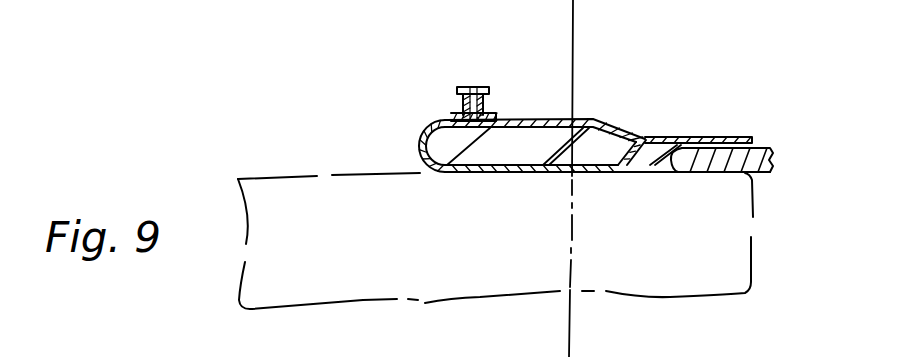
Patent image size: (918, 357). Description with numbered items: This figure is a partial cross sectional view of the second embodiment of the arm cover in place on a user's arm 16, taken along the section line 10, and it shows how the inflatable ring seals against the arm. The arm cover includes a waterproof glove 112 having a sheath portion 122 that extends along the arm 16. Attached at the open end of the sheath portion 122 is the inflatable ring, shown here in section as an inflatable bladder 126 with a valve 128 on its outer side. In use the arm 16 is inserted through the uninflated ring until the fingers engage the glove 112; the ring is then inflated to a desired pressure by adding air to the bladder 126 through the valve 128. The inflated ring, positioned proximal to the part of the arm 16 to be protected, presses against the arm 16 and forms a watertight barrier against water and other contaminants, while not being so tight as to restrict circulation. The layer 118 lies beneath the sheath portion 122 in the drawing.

The section line 10- 10 is at (571, 14).
The arm 16 is at (720, 257).
The waterproof glove 112 is at (557, 113).
The flange 118 is at (750, 177).
The sheath portion 122 is at (708, 137).
The inflatable bladder 126 is at (443, 147).
The valve 128 is at (462, 102).